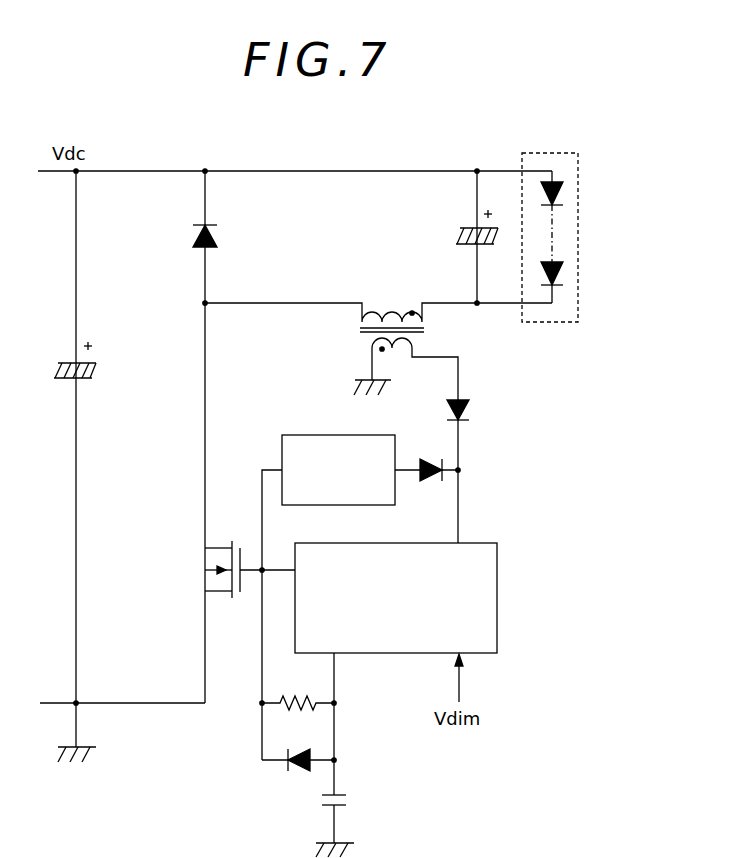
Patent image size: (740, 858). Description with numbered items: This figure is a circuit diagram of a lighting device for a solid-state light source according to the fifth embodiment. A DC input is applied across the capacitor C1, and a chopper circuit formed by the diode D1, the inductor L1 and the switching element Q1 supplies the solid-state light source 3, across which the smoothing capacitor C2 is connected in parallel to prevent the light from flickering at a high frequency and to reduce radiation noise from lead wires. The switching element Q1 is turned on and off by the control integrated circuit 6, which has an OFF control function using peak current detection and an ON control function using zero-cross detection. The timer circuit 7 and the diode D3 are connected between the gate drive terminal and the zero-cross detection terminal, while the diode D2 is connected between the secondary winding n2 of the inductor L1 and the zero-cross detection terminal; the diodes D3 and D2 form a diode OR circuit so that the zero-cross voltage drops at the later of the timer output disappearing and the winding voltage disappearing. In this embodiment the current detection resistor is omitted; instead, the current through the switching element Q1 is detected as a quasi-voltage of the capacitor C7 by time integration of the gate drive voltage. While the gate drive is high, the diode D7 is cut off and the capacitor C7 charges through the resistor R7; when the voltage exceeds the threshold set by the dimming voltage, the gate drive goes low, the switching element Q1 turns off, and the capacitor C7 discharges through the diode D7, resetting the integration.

The solid-state light source 3 is at (535, 153).
The control integrated circuit 6 is at (405, 543).
The timer circuit 7 is at (300, 435).
The capacitor C1 is at (61, 365).
The smoothing capacitor C2 is at (467, 237).
The capacitor C7 is at (345, 755).
The diode D1 is at (190, 359).
The diode D2 is at (473, 471).
The diode D3 is at (427, 458).
The diode D7 is at (299, 748).
The inductor L1 is at (378, 305).
The secondary winding n2 is at (406, 367).
The switching element Q1 is at (231, 622).
The resistor R7 is at (298, 689).